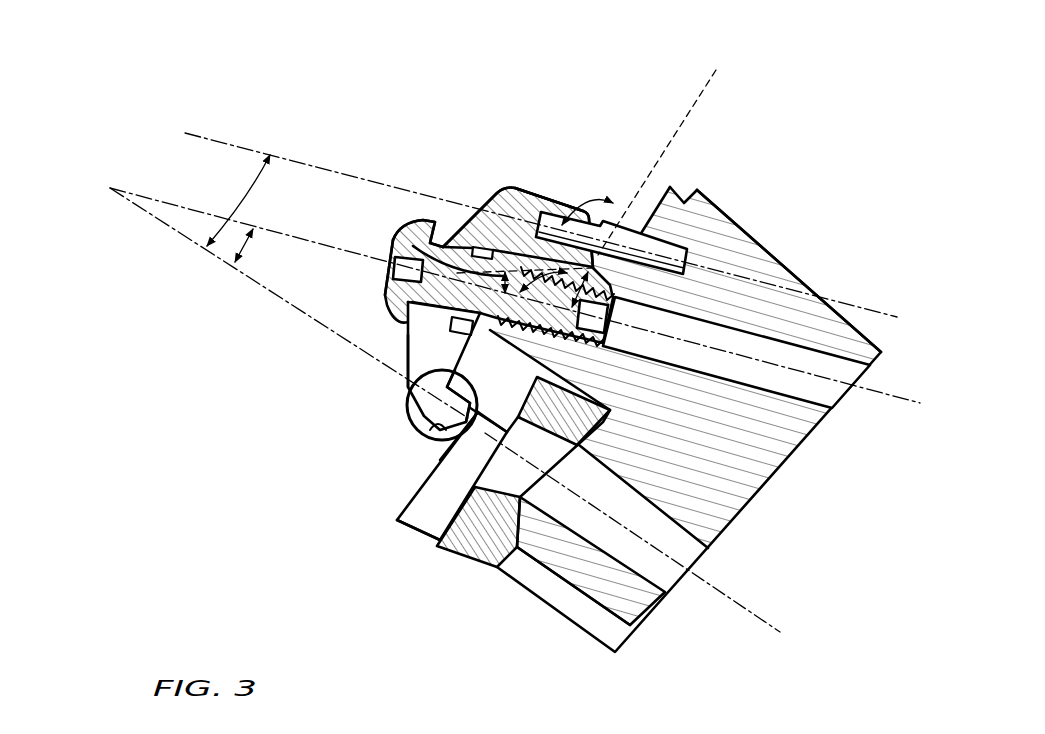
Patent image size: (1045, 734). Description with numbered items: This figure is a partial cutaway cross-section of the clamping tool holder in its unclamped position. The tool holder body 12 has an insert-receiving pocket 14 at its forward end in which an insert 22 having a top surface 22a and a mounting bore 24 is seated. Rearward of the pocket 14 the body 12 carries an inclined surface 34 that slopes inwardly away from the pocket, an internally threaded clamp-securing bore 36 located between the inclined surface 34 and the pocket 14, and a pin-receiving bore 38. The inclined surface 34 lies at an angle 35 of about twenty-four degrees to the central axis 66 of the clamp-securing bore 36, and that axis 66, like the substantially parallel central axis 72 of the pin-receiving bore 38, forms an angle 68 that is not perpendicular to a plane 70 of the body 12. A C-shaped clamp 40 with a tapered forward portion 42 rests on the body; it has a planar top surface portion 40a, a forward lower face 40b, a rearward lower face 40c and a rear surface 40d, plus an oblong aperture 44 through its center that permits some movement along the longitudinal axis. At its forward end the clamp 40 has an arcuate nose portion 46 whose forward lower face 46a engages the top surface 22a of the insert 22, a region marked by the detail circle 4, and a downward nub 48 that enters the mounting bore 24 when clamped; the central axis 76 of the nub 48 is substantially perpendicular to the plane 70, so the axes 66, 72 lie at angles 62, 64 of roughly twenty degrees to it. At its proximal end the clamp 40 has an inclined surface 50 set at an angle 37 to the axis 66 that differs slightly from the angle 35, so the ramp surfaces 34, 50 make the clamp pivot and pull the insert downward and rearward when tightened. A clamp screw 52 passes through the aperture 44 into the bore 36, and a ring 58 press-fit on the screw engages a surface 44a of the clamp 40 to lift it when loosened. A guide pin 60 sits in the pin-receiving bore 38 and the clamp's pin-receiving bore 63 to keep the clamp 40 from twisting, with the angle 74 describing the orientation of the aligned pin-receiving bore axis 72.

The detail circle for FIG. 4 is at (444, 428).
The tool holder body 12 is at (740, 534).
The insert-receiving pocket 14 is at (616, 423).
The insert 22 is at (417, 488).
The top surface 22a is at (397, 519).
The mounting bore 24 is at (483, 478).
The inclined surface 34 is at (670, 188).
The angle 35 is at (606, 305).
The clamp-securing bore 36 is at (797, 348).
The angle 37 is at (392, 232).
The pin-receiving bore 38 is at (680, 238).
The clamp 40 is at (400, 408).
The top surface portion 40a is at (407, 323).
The forward lower face 40b is at (462, 357).
The rearward lower face 40c is at (523, 190).
The rear surface 40d is at (579, 262).
The tapered forward portion 42 is at (393, 390).
The non-circular aperture 44 is at (455, 222).
The surface 44a is at (461, 210).
The nose portion 46 is at (407, 428).
The forward lower face 46a is at (425, 437).
The nub 48 is at (478, 435).
The inclined surface 50 is at (540, 272).
The clamp screw 52 is at (392, 252).
The ring 58 is at (482, 246).
The guide pin 60 is at (640, 233).
The angle 62 is at (247, 250).
The pin-receiving bore 63 is at (511, 192).
The angle 64 is at (250, 200).
The central axis 66 is at (130, 197).
The angle 68 is at (560, 265).
The plane 70 is at (692, 102).
The central axis 72 is at (200, 133).
The angle 74 is at (597, 204).
The central axis 76 is at (112, 188).